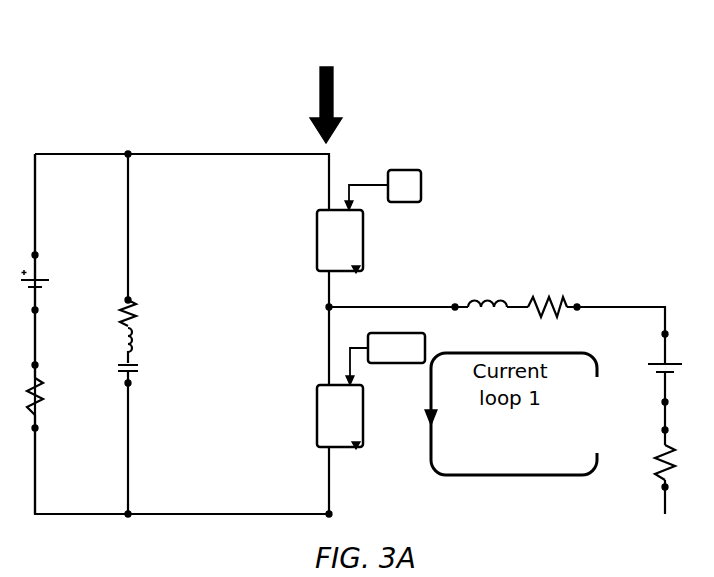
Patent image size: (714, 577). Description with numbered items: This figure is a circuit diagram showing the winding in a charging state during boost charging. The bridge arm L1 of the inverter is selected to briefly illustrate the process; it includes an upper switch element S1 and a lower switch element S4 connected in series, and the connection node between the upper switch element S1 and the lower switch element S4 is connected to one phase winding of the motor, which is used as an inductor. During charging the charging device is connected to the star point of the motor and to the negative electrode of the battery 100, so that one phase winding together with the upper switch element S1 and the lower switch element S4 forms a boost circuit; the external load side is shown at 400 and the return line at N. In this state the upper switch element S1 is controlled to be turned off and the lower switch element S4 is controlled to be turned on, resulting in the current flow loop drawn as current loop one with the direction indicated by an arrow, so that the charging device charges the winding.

The battery 100 is at (37, 265).
The load with battery and resistor 400 is at (655, 360).
The neutral output line with inductor and resistor N is at (567, 305).
The bridge arm L1 is at (324, 90).
The upper switch element S1 is at (346, 225).
The lower switch element S4 is at (350, 399).